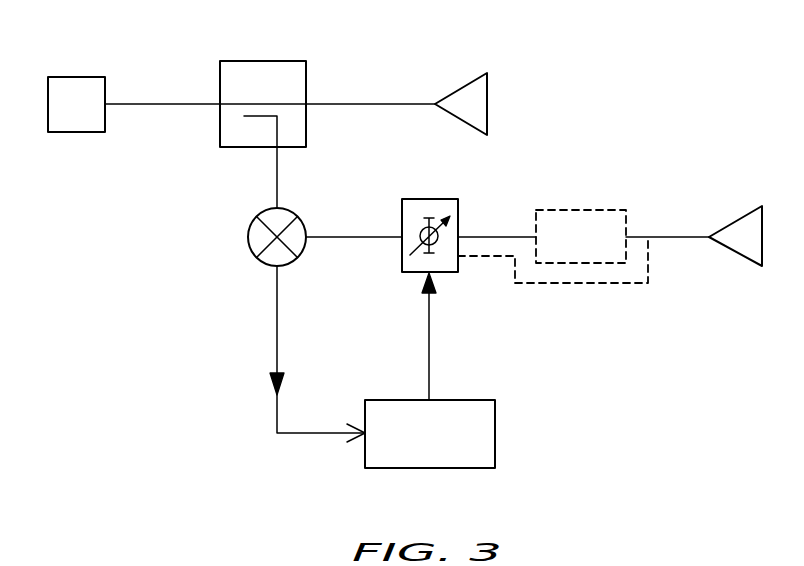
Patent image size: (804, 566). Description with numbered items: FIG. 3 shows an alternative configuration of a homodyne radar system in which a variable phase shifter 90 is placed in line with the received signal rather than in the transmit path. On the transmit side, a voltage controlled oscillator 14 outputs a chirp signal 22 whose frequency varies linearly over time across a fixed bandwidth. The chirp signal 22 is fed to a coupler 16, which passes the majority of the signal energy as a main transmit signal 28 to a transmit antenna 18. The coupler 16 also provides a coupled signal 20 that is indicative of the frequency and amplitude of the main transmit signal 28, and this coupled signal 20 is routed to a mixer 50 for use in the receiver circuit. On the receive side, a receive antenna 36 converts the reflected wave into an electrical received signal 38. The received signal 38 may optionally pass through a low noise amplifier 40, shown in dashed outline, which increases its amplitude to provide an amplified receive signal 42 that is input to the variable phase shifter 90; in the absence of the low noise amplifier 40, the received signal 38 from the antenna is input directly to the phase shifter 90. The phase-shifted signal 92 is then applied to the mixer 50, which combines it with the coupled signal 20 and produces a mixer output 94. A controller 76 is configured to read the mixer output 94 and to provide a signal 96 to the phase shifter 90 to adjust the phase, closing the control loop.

The voltage controlled oscillator 14 is at (78, 77).
The chirp signal 22 is at (178, 104).
The coupler 16 is at (280, 60).
The main transmit signal 28 is at (360, 103).
The transmit antenna 18 is at (460, 87).
The coupled signal 20 is at (277, 168).
The mixer 50 is at (248, 237).
The phase shifter output signal 92 is at (380, 238).
The variable phase shifter 90 is at (402, 213).
The amplified receive signal 42 is at (470, 237).
The low noise amplifier 40 is at (587, 210).
The received signal 38 is at (677, 237).
The receive antenna 36 is at (733, 217).
The mixer output 94 is at (277, 317).
The phase adjustment signal 96 is at (428, 327).
The controller 76 is at (495, 435).